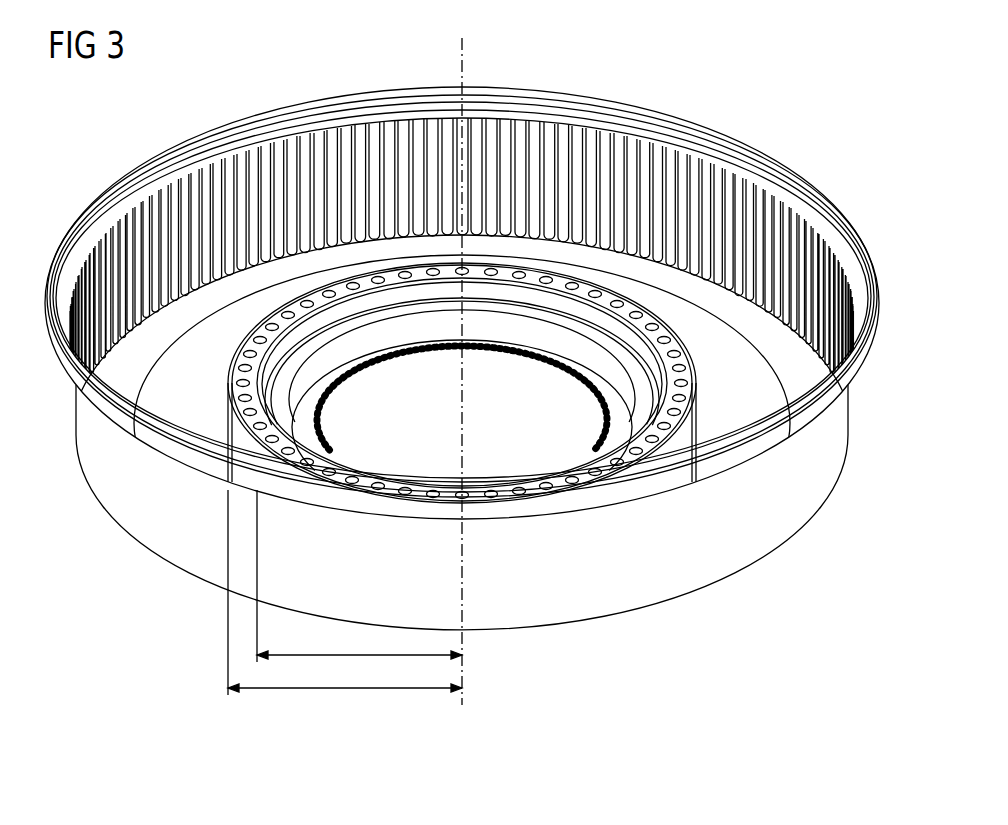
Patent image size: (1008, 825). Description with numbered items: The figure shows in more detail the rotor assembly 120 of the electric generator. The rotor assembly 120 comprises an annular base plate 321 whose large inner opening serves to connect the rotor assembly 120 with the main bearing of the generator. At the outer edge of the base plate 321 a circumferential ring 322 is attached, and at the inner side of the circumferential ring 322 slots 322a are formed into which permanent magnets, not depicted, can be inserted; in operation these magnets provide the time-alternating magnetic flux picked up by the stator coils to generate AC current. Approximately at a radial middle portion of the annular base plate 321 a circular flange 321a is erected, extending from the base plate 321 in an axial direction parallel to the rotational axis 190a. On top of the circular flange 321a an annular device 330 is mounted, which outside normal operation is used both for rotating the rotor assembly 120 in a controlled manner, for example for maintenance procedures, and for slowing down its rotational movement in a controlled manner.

The rotor assembly 120 is at (462, 369).
The annular base plate 321 is at (207, 398).
The circular flange 321a is at (684, 435).
The circumferential ring 322 is at (751, 537).
The slots 322a is at (504, 120).
The annular device 330 is at (657, 445).
The rotational axis 190a is at (465, 692).